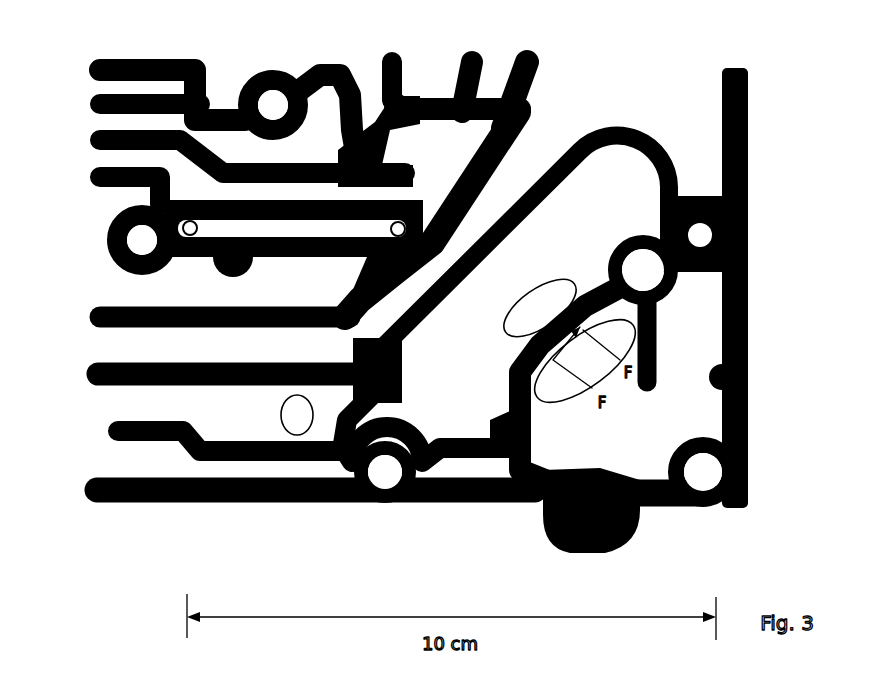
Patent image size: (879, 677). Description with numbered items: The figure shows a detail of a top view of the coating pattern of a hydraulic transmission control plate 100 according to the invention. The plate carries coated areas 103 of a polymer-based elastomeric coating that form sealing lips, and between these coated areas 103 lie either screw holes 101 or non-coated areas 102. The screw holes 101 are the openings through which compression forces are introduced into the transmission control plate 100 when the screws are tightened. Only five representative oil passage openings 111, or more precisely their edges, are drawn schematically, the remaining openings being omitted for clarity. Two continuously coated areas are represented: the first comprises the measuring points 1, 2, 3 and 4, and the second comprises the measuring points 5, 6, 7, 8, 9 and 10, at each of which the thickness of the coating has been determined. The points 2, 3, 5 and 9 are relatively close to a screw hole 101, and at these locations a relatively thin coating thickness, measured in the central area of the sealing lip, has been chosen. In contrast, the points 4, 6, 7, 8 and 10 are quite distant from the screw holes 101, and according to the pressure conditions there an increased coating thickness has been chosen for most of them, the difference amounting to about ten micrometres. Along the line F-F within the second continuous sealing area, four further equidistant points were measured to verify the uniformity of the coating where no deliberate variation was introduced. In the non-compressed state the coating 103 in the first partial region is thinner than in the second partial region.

The measuring point 1 is at (158, 63).
The measuring point 2 is at (106, 218).
The measuring point 3 is at (250, 268).
The measuring point 4 is at (437, 225).
The measuring point 5 is at (653, 232).
The measuring point 6 is at (517, 227).
The measuring point 7 is at (400, 363).
The measuring point 8 is at (183, 503).
The measuring point 9 is at (613, 543).
The measuring point 10 is at (758, 128).
The transmission control plate 100 is at (750, 240).
The screw hole 101 is at (127, 248).
The non-coated area 102 is at (695, 408).
The coated area 103 is at (96, 170).
The oil passage opening 111 is at (195, 245).